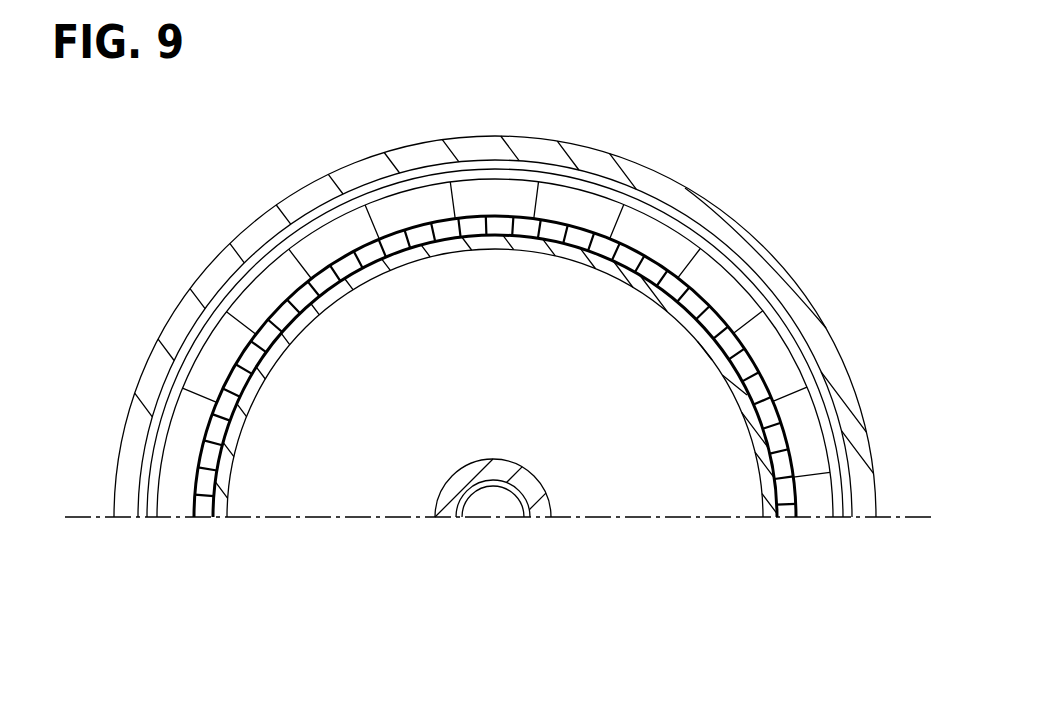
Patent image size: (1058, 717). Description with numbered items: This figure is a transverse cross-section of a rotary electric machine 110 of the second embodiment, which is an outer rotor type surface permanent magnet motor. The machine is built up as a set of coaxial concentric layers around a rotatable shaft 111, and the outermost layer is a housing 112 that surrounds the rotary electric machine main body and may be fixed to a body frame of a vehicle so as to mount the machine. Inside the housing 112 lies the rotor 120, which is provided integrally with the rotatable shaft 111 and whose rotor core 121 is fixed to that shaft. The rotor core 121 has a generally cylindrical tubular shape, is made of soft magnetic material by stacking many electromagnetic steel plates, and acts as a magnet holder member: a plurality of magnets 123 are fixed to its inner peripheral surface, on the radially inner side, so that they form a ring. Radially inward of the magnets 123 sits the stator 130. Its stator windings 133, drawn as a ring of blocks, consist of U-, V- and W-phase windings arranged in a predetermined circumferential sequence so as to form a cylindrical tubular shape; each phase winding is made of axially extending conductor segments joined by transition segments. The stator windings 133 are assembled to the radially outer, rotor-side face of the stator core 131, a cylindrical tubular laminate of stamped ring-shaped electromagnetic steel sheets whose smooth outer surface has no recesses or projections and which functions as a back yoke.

The rotary electric machine 110 is at (822, 119).
The rotatable shaft 111 is at (535, 477).
The housing 112 is at (772, 256).
The rotor 120 is at (550, 343).
The rotor core 121 is at (856, 400).
The magnets 123 is at (795, 365).
The stator 130 is at (483, 420).
The stator core 131 is at (218, 501).
The stator windings 133 is at (202, 498).